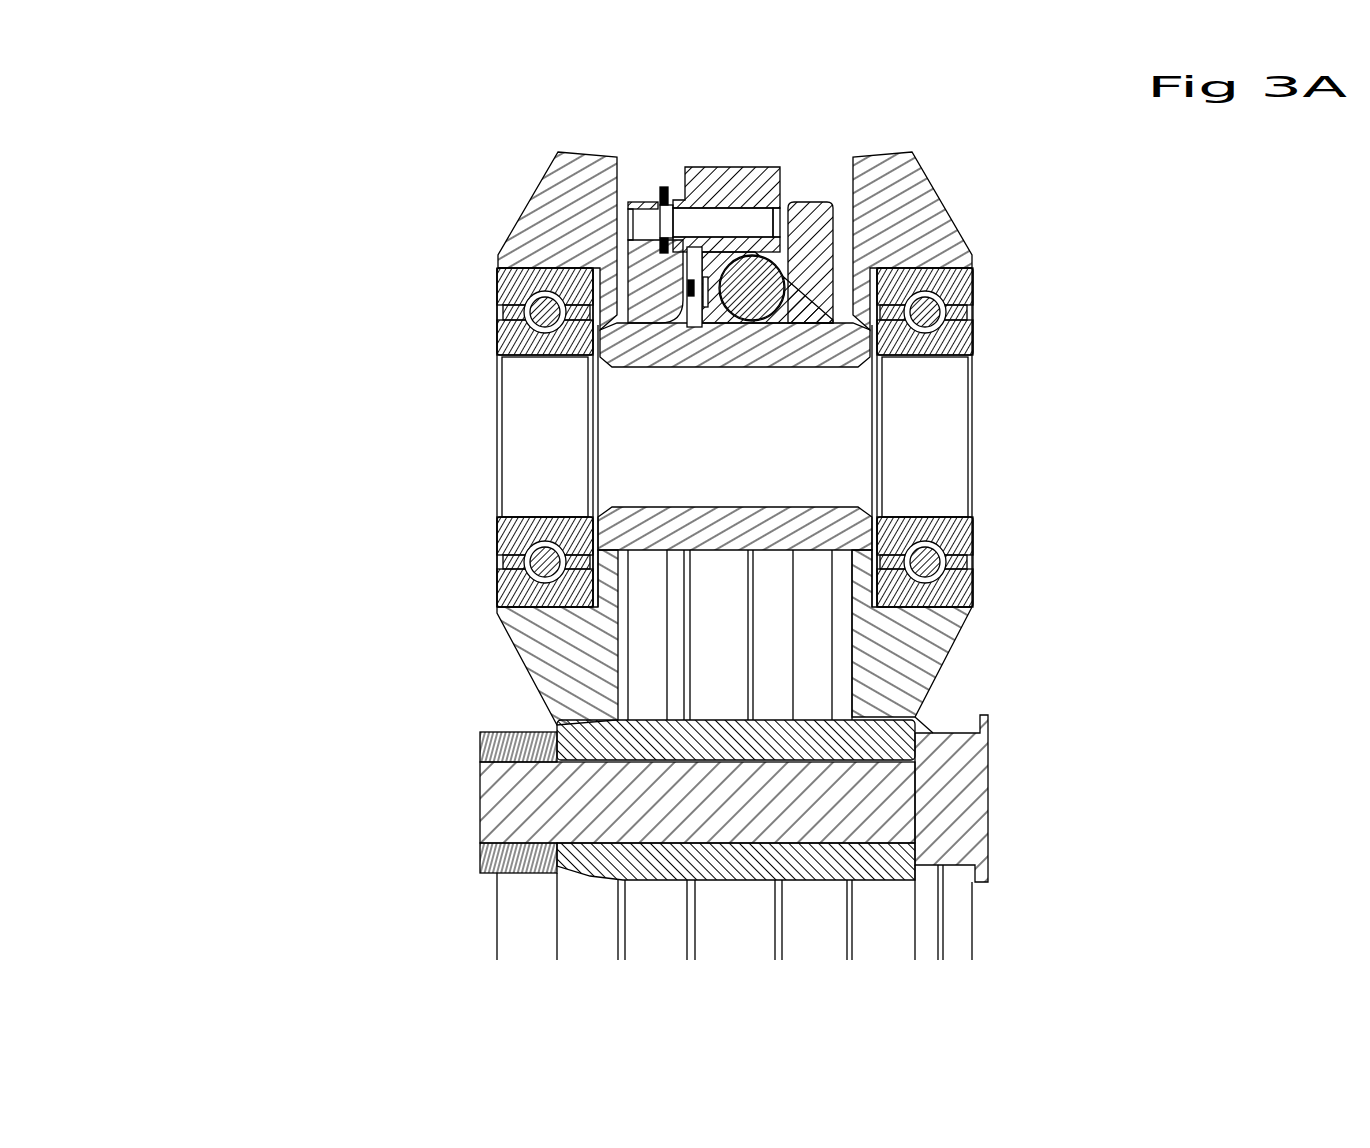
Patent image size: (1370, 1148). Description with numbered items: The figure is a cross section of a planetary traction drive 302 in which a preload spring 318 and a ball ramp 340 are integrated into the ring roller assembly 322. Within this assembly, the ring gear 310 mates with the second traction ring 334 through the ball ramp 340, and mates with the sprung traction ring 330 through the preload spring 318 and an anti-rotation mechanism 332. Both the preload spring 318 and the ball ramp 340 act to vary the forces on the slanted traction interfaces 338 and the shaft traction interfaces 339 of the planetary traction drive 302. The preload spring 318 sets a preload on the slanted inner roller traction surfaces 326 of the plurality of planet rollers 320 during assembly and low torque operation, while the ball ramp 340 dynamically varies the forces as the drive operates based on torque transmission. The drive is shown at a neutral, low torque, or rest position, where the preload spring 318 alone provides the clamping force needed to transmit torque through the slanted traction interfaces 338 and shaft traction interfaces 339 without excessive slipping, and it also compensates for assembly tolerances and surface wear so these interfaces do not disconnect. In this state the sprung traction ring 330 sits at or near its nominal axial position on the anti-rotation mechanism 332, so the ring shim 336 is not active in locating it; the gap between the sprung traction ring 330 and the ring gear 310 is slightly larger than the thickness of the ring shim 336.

The planetary traction drive 302 is at (290, 197).
The ring gear 310 is at (722, 167).
The preload spring 318 is at (680, 325).
The plurality of planet rollers 320 is at (880, 910).
The ring roller assembly 322 is at (758, 167).
The slanted inner roller traction surfaces 326 is at (813, 550).
The sprung traction ring 330 is at (648, 295).
The anti-rotation mechanism 332 is at (653, 225).
The second traction ring 334 is at (823, 228).
The ring shim 336 is at (663, 188).
The slanted traction interfaces 338 is at (675, 338).
The shaft traction interfaces 339 is at (885, 720).
The ball ramp 340 is at (760, 289).